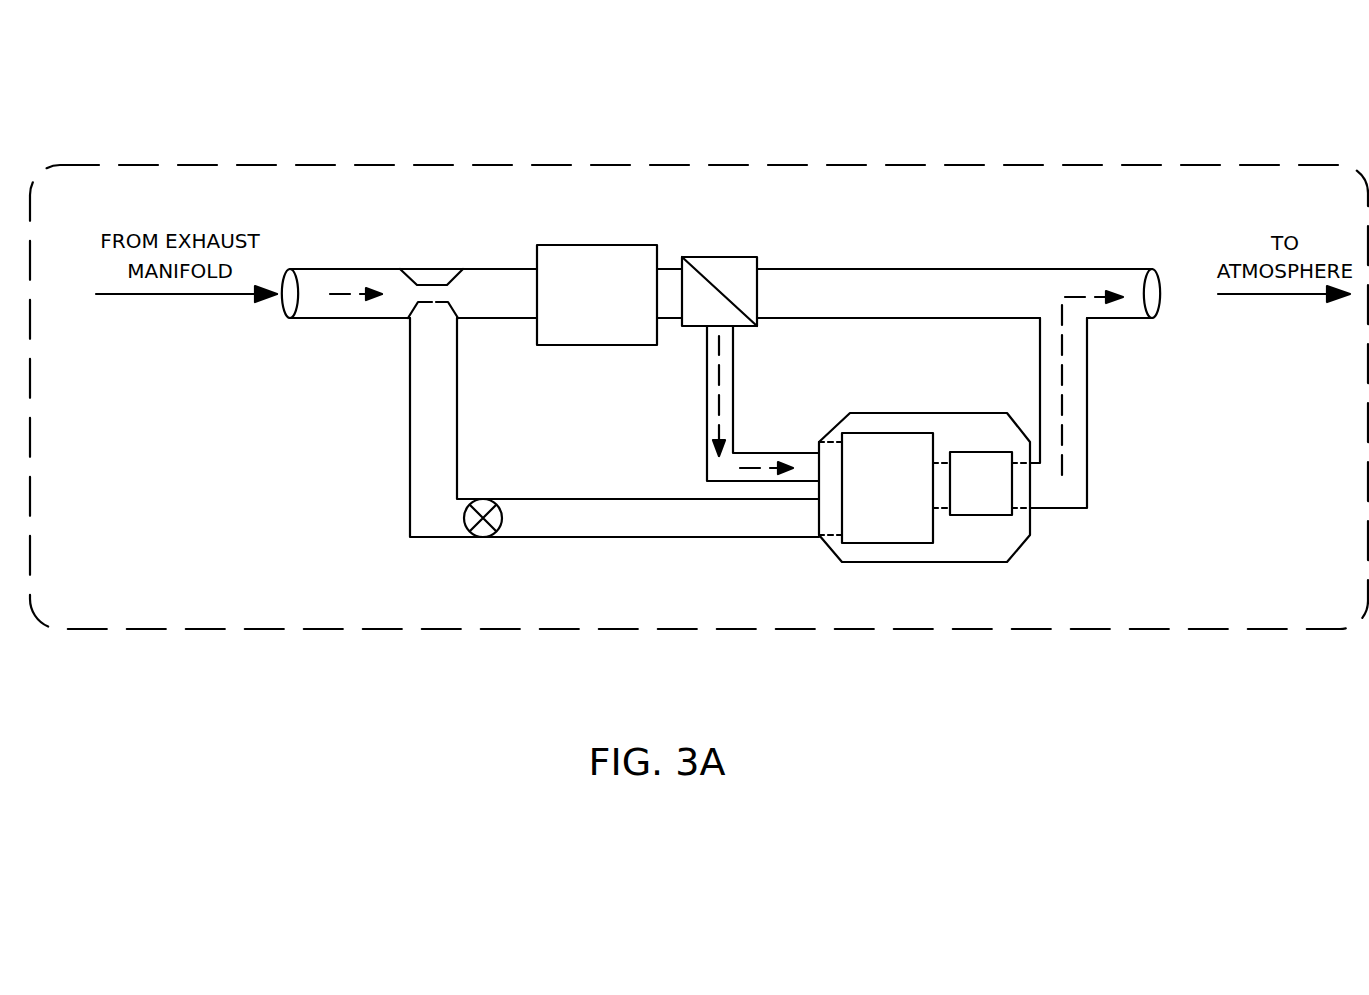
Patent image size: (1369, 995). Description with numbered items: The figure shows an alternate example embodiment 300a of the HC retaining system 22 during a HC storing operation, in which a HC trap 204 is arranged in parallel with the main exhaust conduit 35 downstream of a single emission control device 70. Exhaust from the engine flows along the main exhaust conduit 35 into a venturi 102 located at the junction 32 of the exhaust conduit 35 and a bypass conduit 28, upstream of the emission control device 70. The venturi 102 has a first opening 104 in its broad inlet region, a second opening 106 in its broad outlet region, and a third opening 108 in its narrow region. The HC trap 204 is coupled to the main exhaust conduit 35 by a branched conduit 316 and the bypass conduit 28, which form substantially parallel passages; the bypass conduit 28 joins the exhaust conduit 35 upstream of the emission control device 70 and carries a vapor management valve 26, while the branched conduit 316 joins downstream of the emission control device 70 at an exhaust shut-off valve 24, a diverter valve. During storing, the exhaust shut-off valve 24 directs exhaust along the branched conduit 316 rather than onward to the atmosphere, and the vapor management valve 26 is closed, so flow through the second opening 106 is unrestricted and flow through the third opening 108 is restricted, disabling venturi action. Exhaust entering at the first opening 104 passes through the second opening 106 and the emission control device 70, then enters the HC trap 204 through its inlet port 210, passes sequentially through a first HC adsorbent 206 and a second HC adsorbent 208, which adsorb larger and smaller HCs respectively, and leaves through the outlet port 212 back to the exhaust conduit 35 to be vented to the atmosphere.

The alternate example embodiment 300a is at (1288, 98).
The HC retaining system 22 is at (920, 165).
The main exhaust conduit 35 is at (877, 268).
The venturi 102 is at (427, 268).
The first opening 104 is at (400, 298).
The second opening 106 is at (457, 297).
The third opening 108 is at (432, 305).
The junction 32 is at (460, 322).
The bypass conduit 28 is at (410, 418).
The vapor management valve 26 is at (485, 499).
The emission control device 70 is at (590, 245).
The exhaust shut-off valve 24 is at (700, 257).
The branched conduit 316 is at (735, 392).
The HC trap 204 is at (878, 563).
The first HC adsorbent 206 is at (887, 488).
The second HC adsorbent 208 is at (981, 483).
The inlet port 210 is at (817, 490).
The outlet port 212 is at (1030, 487).